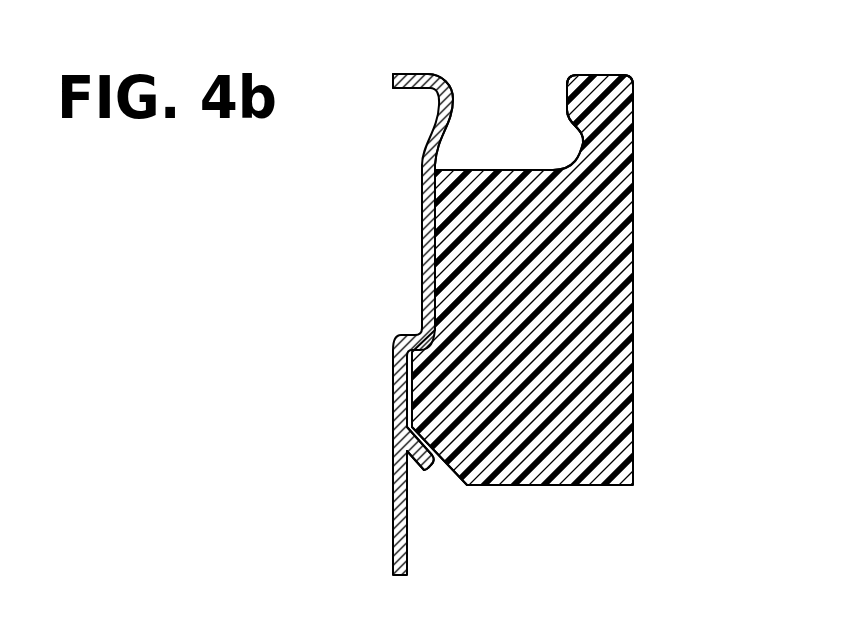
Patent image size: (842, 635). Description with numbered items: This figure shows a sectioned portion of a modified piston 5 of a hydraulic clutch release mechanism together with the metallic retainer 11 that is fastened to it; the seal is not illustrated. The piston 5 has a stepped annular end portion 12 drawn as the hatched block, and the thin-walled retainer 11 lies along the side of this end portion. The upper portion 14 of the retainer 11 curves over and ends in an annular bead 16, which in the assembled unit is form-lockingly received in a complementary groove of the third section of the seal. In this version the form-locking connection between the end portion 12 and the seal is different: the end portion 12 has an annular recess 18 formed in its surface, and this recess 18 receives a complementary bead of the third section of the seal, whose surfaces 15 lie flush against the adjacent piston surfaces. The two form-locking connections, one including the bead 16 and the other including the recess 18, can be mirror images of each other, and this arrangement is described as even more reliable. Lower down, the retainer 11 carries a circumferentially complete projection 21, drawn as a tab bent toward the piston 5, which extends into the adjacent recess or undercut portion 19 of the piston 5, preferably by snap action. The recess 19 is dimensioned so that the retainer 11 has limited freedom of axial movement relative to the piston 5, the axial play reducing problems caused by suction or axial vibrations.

The annular piston 5 is at (623, 357).
The retainer 11 is at (422, 212).
The end portion 12 is at (633, 93).
The portion of the retainer 14 is at (452, 100).
The surface of the third section 15 is at (533, 173).
The annular bead 16 is at (430, 83).
The annular recess 18 is at (633, 123).
The recess 19 is at (455, 487).
The projection 21 is at (420, 470).